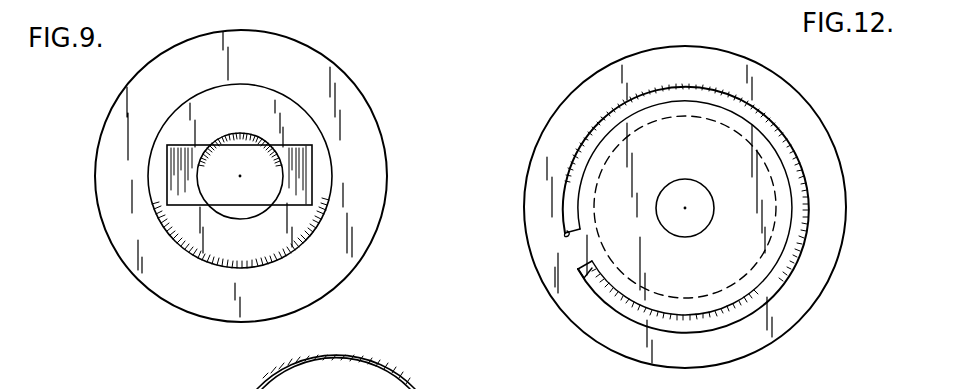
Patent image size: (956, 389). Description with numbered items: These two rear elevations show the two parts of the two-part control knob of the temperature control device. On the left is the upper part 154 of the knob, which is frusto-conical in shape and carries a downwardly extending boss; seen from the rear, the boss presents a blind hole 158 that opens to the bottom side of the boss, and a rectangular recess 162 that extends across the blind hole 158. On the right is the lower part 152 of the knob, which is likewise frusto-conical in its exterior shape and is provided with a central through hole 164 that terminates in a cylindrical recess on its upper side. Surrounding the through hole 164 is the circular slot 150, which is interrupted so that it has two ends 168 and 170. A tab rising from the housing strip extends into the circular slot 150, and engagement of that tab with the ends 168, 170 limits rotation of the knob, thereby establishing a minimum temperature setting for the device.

In FIG. 9, the upper part 154 is at (95, 172).
In FIG. 9, the rectangular recess 162 is at (293, 148).
In FIG. 9, the blind hole 158 is at (253, 214).
In FIG. 12, the lower part 152 is at (566, 99).
In FIG. 12, the circular slot 150 is at (575, 185).
In FIG. 12, the end 168 is at (565, 232).
In FIG. 12, the end 170 is at (585, 275).
In FIG. 12, the through hole 164 is at (698, 186).